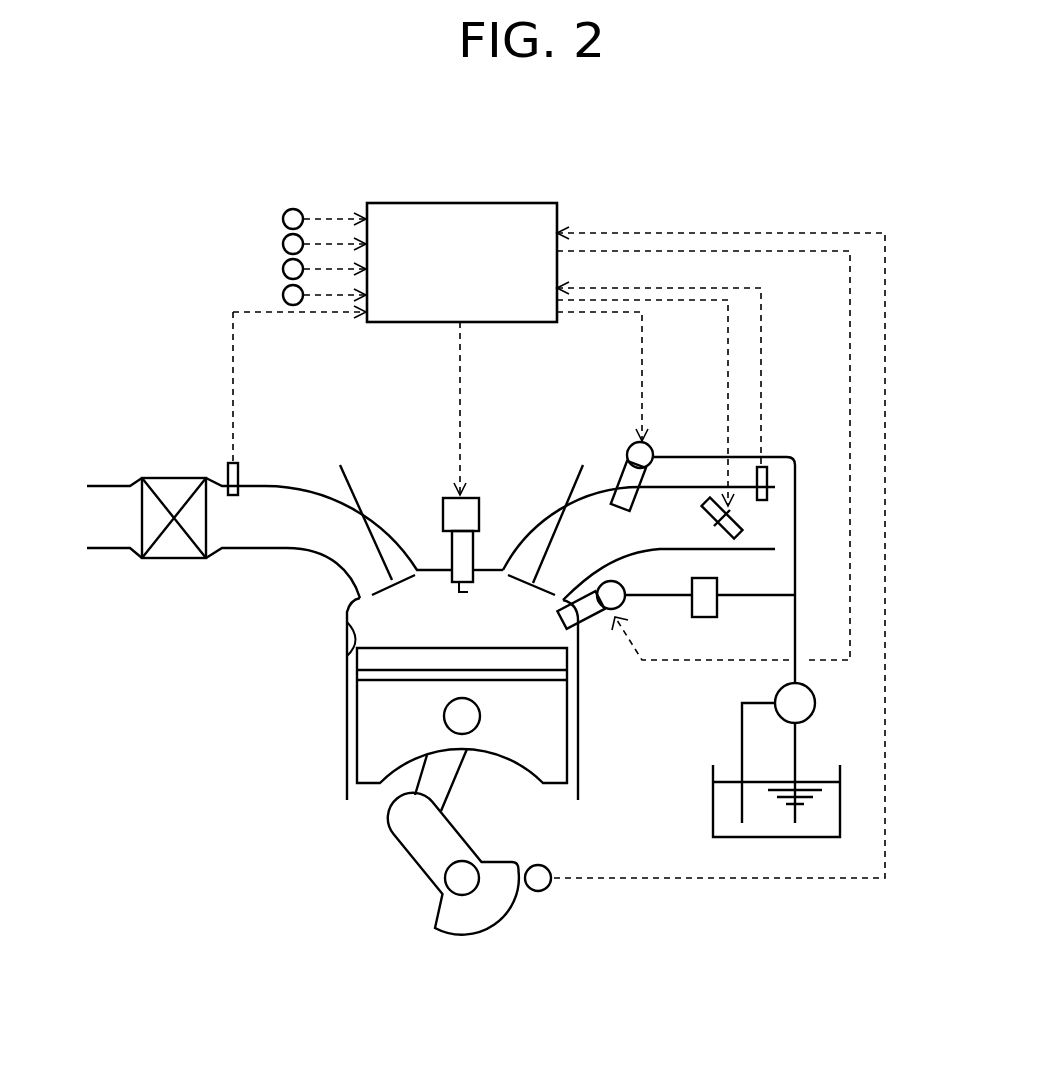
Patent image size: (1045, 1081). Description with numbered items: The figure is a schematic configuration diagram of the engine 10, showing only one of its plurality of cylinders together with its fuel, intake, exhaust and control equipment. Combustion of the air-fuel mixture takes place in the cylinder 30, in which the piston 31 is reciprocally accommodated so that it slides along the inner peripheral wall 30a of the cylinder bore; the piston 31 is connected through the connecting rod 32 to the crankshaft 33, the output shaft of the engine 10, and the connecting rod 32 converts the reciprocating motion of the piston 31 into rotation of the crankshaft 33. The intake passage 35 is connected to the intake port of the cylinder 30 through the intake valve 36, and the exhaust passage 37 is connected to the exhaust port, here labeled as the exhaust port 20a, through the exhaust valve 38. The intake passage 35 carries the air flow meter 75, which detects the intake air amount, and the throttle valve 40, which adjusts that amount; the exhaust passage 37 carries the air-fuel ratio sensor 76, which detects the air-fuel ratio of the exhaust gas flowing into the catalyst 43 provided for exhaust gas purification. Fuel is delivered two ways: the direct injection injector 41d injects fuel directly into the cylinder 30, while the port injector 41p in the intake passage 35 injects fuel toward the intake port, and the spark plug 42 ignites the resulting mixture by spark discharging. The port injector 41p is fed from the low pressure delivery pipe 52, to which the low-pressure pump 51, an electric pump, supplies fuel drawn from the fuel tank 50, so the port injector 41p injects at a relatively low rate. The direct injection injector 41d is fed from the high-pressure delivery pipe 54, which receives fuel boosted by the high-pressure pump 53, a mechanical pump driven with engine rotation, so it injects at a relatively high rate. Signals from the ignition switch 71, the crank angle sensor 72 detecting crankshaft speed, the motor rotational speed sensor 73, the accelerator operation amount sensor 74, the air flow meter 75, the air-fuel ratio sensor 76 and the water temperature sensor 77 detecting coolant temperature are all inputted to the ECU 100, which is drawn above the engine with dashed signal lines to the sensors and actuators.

The engine 10 is at (255, 698).
The exhaust port 20a is at (598, 567).
The cylinder 30 is at (422, 638).
The inner peripheral wall 30a is at (347, 626).
The piston 31 is at (375, 708).
The connecting rod 32 is at (455, 775).
The crankshaft 33 is at (460, 878).
The intake passage 35 is at (743, 549).
The intake valve 36 is at (565, 492).
The exhaust passage 37 is at (293, 548).
The exhaust valve 38 is at (353, 497).
The throttle valve 40 is at (738, 520).
The port injector 41p is at (612, 487).
The direct injection injector 41d is at (556, 615).
The spark plug 42 is at (479, 512).
The catalyst 43 is at (178, 478).
The fuel tank 50 is at (713, 822).
The low-pressure pump 51 is at (817, 703).
The low pressure delivery pipe 52 is at (650, 447).
The high-pressure pump 53 is at (717, 605).
The high-pressure delivery pipe 54 is at (625, 586).
The ignition switch 71 is at (283, 219).
The crank angle sensor 72 is at (538, 865).
The motor rotational speed sensor 73 is at (283, 244).
The accelerator operation amount sensor 74 is at (283, 269).
The air flow meter 75 is at (769, 478).
The air-fuel ratio sensor 76 is at (239, 477).
The water temperature sensor 77 is at (283, 295).
The ECU 100 is at (510, 203).